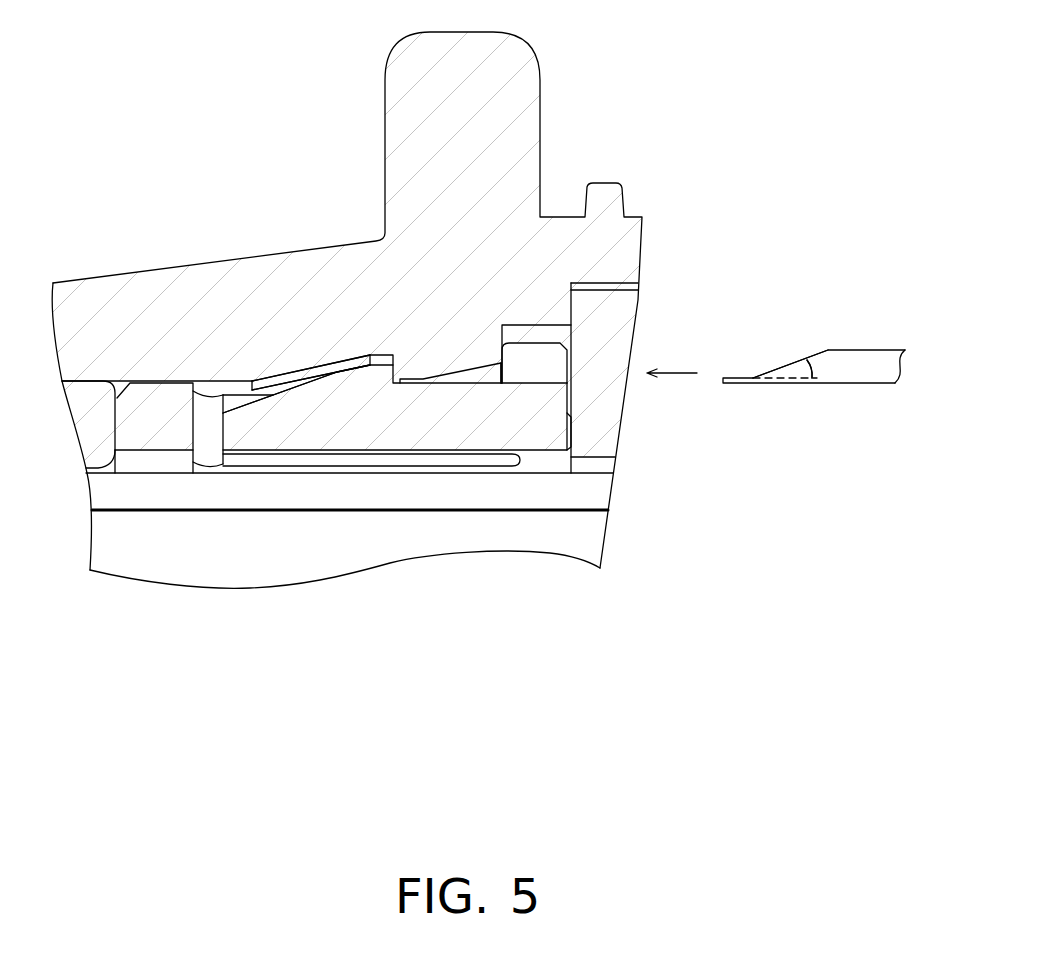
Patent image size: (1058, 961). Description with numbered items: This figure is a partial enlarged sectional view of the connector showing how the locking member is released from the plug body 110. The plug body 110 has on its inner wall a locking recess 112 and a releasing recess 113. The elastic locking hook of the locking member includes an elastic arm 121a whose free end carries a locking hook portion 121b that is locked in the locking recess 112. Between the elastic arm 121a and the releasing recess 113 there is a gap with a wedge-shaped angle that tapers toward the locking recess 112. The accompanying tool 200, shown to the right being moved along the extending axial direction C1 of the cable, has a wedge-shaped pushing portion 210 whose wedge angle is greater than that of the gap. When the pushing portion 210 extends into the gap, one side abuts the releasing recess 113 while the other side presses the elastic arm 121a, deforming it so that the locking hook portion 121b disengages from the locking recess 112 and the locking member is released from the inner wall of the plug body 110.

The plug body 110 is at (100, 282).
The locking recess 112 is at (310, 367).
The releasing recess 113 is at (462, 372).
The elastic arm 121a is at (458, 454).
The locking hook portion 121b is at (377, 377).
The accompanying tool 200 is at (867, 362).
The pushing portion 210 is at (784, 366).
The extending axial direction of the cable C1 is at (497, 726).